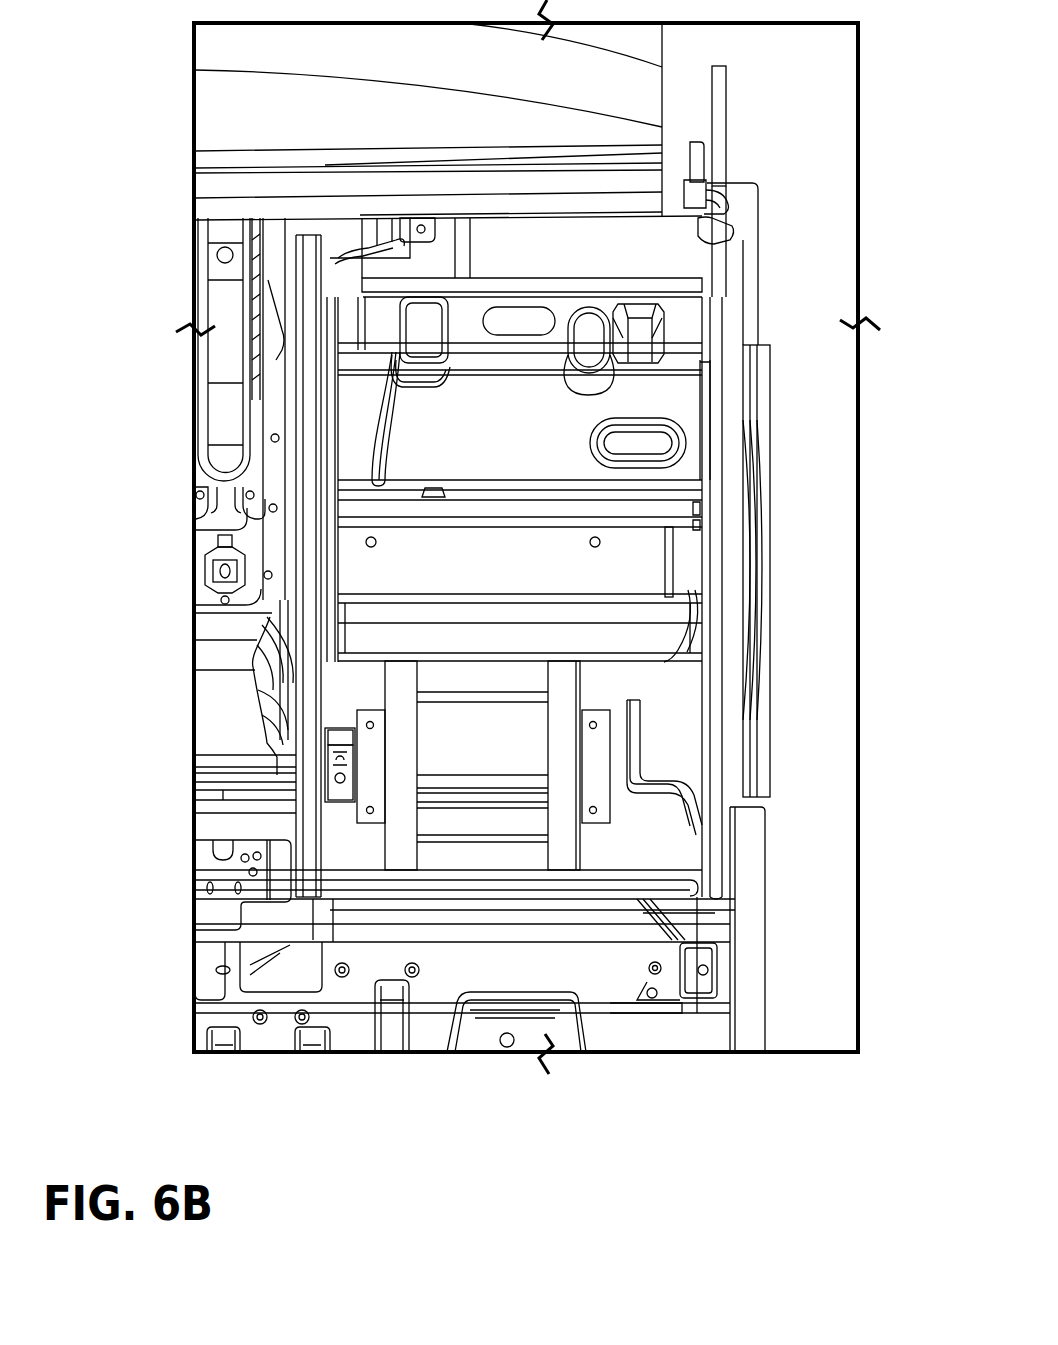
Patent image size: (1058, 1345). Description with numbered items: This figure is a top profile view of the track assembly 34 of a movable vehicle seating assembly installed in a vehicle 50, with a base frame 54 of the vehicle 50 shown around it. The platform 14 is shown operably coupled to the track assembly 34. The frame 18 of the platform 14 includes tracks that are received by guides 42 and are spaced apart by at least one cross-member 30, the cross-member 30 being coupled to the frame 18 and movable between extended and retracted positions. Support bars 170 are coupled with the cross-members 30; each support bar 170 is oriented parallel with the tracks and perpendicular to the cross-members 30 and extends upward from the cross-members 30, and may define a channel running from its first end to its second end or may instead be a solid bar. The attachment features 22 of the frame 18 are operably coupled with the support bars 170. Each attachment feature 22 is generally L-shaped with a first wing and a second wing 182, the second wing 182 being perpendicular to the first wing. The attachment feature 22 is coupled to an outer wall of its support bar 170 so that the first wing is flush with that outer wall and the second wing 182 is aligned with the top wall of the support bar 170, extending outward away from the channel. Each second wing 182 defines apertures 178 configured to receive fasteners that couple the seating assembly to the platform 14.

The vehicle 50 is at (797, 116).
The base frame 54 is at (640, 400).
The track assembly 34 is at (737, 344).
The guides 42 is at (313, 490).
The support bars 170 is at (402, 818).
The cross-member 30 is at (618, 672).
The apertures 178 is at (364, 712).
The second wing 182 is at (365, 755).
The attachment feature 22 is at (368, 779).
The platform 14 is at (321, 714).
The frame 18 is at (355, 863).